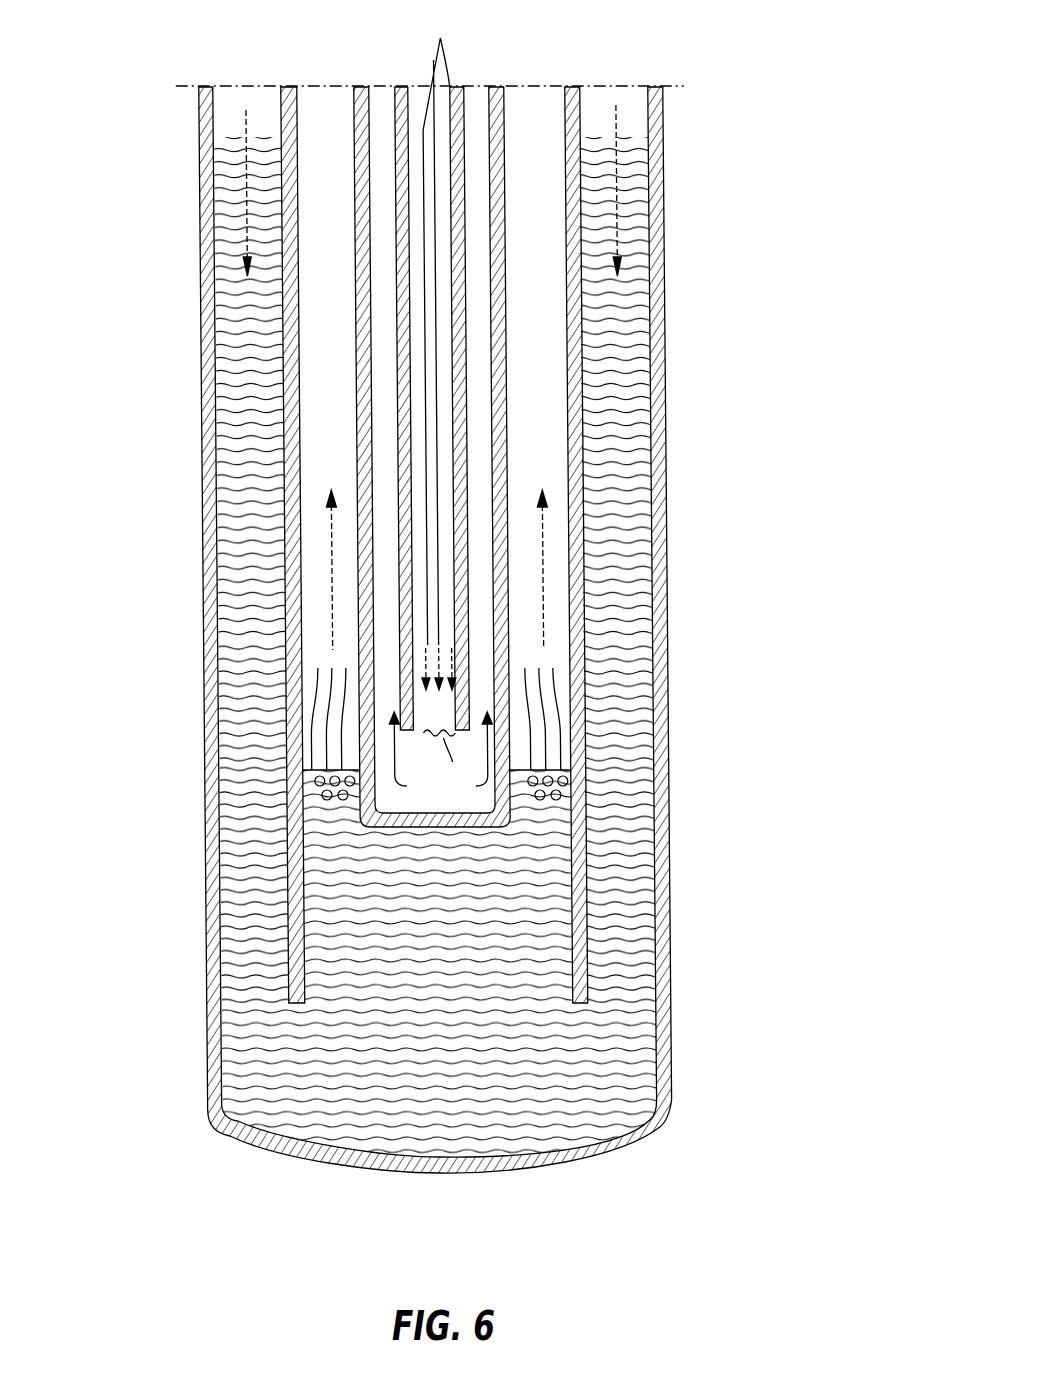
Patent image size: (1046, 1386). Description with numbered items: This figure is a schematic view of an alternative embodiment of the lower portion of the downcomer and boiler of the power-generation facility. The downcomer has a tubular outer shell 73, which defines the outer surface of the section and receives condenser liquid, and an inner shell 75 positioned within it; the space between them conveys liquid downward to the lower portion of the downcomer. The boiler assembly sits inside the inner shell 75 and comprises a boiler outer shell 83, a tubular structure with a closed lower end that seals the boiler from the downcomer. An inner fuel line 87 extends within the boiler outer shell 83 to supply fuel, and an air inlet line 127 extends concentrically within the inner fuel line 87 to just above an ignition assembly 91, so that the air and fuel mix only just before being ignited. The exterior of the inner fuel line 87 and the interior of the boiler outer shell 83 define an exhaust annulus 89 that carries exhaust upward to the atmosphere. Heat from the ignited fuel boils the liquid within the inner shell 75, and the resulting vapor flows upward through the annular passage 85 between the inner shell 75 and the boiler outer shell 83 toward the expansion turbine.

The outer shell 73 is at (662, 173).
The inner shell 75 is at (564, 157).
The boiler outer shell 83 is at (505, 448).
The annular passage 85 is at (553, 267).
The inner fuel line 87 is at (417, 130).
The exhaust annulus 89 is at (478, 85).
The ignition assembly 91 is at (441, 749).
The air inlet line 127 is at (422, 198).